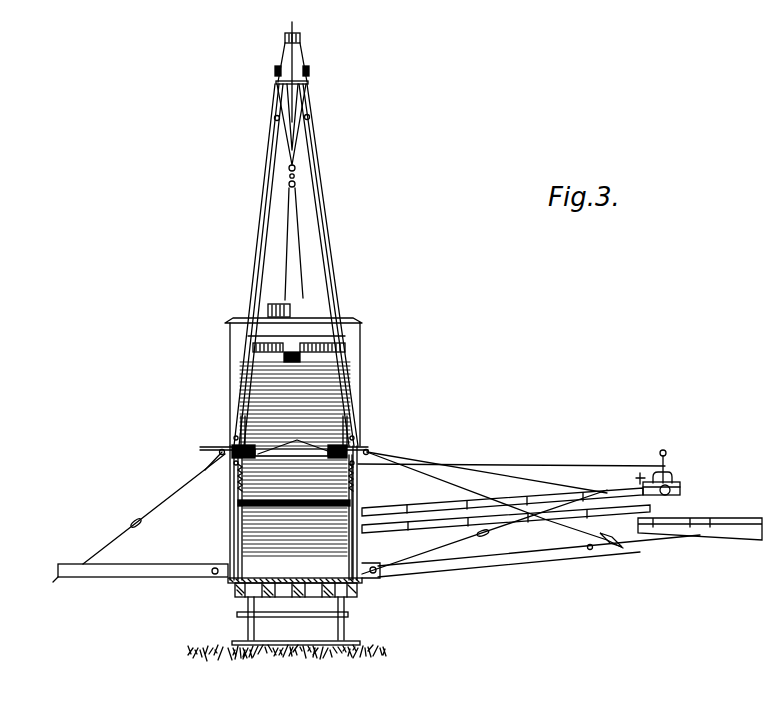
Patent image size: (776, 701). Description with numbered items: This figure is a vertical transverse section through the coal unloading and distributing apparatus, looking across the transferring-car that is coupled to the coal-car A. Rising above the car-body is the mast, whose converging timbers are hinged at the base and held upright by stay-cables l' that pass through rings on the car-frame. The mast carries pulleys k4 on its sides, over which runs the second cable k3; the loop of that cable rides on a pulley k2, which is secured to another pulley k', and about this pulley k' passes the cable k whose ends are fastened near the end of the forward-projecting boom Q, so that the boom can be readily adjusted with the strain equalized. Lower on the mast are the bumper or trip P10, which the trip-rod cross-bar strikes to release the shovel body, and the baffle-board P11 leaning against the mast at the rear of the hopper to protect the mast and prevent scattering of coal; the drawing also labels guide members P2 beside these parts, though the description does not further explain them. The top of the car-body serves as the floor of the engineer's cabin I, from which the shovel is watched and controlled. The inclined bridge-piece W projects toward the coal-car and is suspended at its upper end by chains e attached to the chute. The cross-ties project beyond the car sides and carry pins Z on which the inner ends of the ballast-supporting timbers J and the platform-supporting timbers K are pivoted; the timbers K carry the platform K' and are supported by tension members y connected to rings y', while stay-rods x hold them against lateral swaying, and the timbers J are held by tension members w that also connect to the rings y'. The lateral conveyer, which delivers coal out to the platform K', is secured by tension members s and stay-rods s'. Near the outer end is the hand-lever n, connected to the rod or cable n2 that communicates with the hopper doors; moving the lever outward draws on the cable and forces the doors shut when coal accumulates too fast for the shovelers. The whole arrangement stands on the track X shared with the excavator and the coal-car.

The pulleys k4 is at (334, 62).
The second cable k3 is at (290, 150).
The pulley k2 is at (289, 170).
The cable k is at (250, 207).
The pulley k' is at (326, 234).
The stay-cables l' is at (292, 274).
The engineer's cabin I is at (238, 337).
The bumper or trip P10 is at (295, 362).
The baffle-board P11 is at (314, 369).
The guide posts P2 is at (344, 428).
The boom Q is at (295, 442).
The rings y' is at (296, 460).
The tension members w is at (154, 510).
The chains e is at (240, 480).
The bridge-piece W is at (294, 506).
The coal-car A is at (295, 581).
The ballast-supporting timbers J is at (130, 577).
The pins Z is at (212, 576).
The track X is at (335, 640).
The tension members y is at (495, 493).
The tension members s is at (487, 466).
The rod or cable n2 is at (600, 465).
The hand-lever n is at (659, 470).
The platform K' is at (700, 513).
The platform-supporting timbers K is at (531, 560).
The stay-rods x is at (560, 553).
The stay-rods s' is at (484, 544).